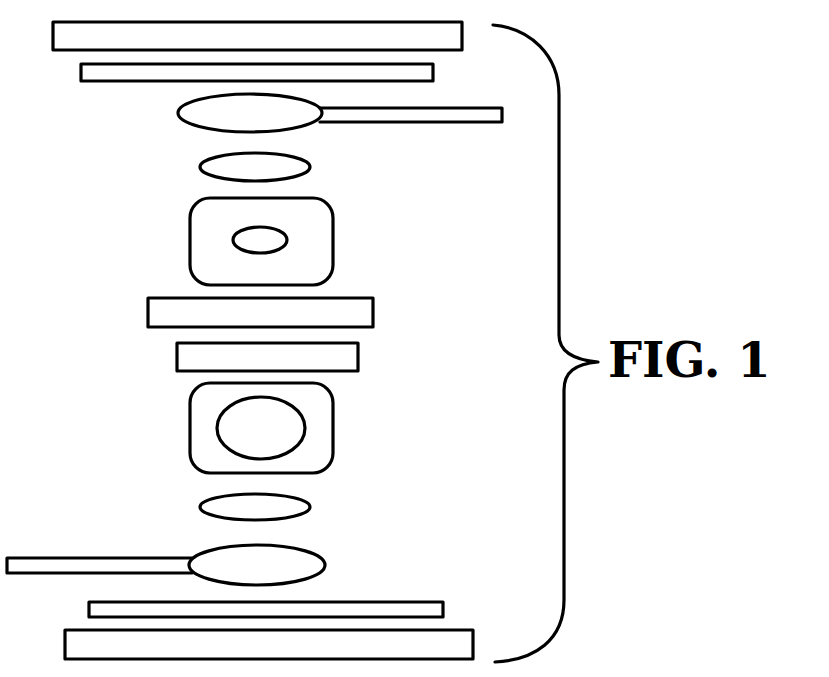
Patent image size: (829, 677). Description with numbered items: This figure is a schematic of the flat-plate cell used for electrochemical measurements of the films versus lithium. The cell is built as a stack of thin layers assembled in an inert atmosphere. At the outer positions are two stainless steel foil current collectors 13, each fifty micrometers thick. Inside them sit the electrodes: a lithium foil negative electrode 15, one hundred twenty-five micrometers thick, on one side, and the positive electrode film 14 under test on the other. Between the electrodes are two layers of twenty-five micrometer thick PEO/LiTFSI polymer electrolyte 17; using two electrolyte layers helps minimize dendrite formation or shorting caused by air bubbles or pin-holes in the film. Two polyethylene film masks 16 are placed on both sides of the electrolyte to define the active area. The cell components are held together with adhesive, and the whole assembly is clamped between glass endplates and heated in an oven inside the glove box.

The stainless steel foil current collector 13 is at (104, 556).
The positive electrode film 14 is at (200, 172).
The lithium foil negative electrode 15 is at (200, 507).
The mask 16 is at (190, 257).
The polymer electrolyte layer 17 is at (148, 318).